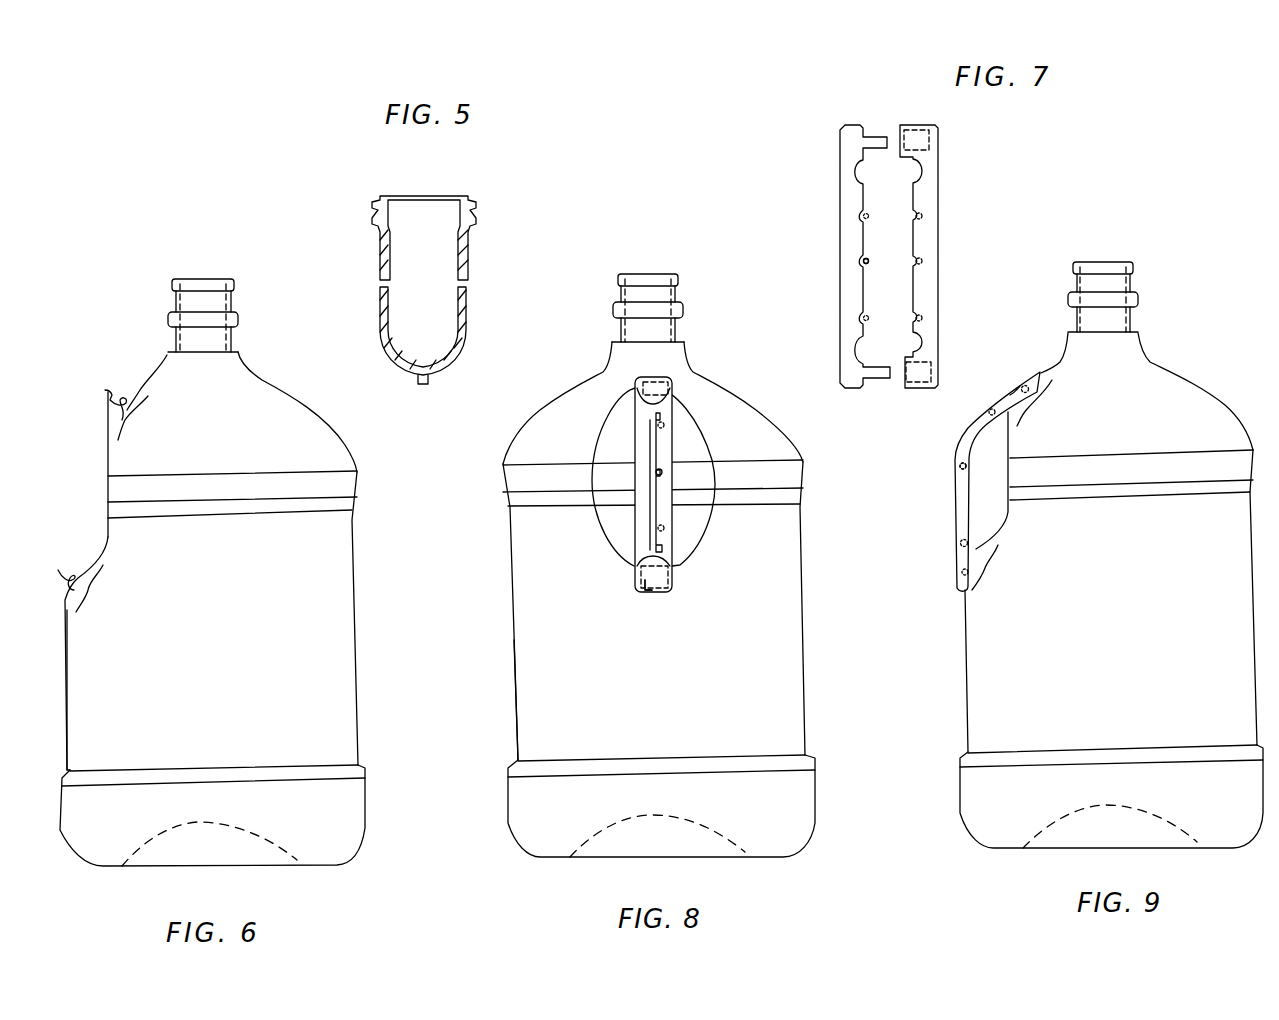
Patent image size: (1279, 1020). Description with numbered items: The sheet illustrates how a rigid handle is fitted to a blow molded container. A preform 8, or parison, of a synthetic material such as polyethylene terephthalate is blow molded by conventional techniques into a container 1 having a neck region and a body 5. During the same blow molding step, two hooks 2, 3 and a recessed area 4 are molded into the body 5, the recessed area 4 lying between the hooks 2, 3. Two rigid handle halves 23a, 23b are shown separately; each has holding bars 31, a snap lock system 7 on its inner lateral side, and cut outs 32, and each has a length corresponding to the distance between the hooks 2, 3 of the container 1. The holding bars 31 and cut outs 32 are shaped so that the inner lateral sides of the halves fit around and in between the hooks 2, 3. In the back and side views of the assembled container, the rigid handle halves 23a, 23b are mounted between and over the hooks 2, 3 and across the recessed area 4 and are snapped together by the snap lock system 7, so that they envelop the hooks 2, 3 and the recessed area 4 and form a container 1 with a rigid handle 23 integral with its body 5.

In FIG. 6, the container 1 is at (264, 404).
In FIG. 8, the container 1 is at (748, 424).
In FIG. 9, the container 1 is at (1178, 402).
In FIG. 6, the hook 2 is at (60, 580).
In FIG. 8, the hook 2 is at (661, 566).
In FIG. 9, the hook 2 is at (963, 566).
In FIG. 6, the hook 3 is at (108, 398).
In FIG. 8, the hook 3 is at (656, 408).
In FIG. 9, the hook 3 is at (1010, 398).
In FIG. 6, the recessed area 4 is at (108, 453).
In FIG. 8, the recessed area 4 is at (602, 524).
In FIG. 9, the recessed area 4 is at (1006, 452).
In FIG. 6, the body 5 is at (80, 684).
In FIG. 8, the body 5 is at (600, 640).
In FIG. 9, the body 5 is at (972, 654).
In FIG. 7, the snap lock system 7 is at (868, 262).
In FIG. 8, the snap lock system 7 is at (661, 474).
In FIG. 9, the snap lock system 7 is at (960, 466).
In FIG. 5, the preform 8 is at (384, 256).
In FIG. 7, the rigid handle 23 is at (899, 256).
In FIG. 8, the rigid handle 23 is at (661, 484).
In FIG. 9, the rigid handle 23 is at (960, 508).
In FIG. 7, the rigid handle half 23a is at (844, 236).
In FIG. 8, the rigid handle half 23a is at (644, 458).
In FIG. 7, the rigid handle half 23b is at (932, 236).
In FIG. 8, the rigid handle half 23b is at (667, 494).
In FIG. 7, the holding bar 31 is at (870, 140).
In FIG. 8, the holding bar 31 is at (657, 585).
In FIG. 7, the cut out 32 is at (918, 170).